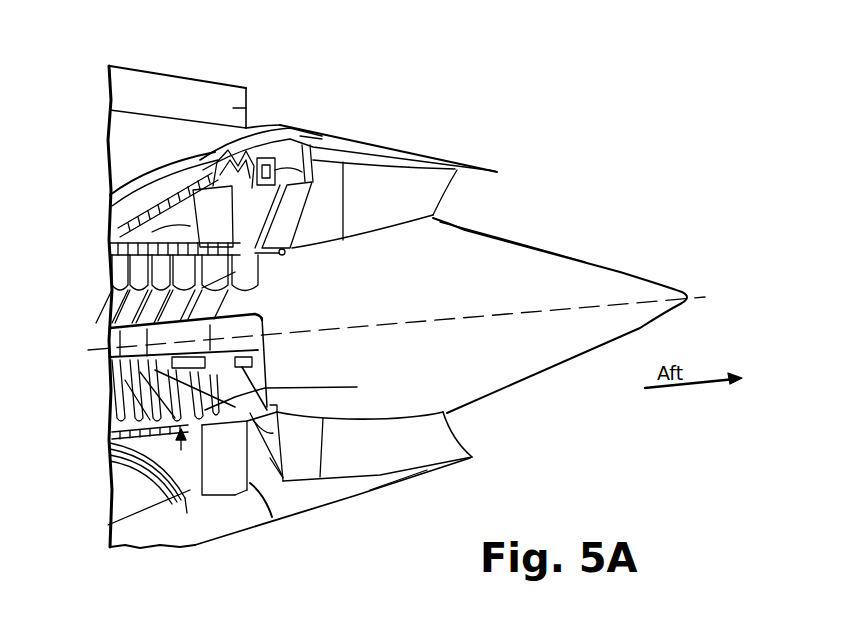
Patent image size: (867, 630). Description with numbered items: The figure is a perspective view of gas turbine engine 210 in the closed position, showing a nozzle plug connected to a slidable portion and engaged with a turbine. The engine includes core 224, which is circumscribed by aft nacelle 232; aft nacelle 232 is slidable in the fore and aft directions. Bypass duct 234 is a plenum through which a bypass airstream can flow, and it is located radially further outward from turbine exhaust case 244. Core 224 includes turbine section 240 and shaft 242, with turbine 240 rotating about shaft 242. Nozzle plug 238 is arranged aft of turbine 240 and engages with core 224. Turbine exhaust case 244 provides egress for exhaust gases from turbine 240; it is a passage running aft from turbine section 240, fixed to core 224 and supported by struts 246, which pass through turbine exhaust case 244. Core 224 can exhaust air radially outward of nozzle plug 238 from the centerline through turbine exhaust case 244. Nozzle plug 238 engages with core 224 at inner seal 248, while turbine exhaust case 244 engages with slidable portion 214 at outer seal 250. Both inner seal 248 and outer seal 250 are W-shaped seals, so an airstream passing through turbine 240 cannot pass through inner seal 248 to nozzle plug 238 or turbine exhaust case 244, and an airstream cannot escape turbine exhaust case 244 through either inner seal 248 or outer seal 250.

The gas turbine engine 210 is at (600, 145).
The slidable portion 214 is at (264, 74).
The core 224 is at (110, 521).
The aft nacelle 232 is at (267, 513).
The bypass duct 234 is at (250, 111).
The nozzle plug 238 is at (583, 260).
The turbine 240 is at (278, 388).
The shaft 242 is at (266, 336).
The turbine exhaust case 244 is at (237, 478).
The strut 246 is at (333, 198).
The inner seal 248 is at (286, 255).
The outer seal 250 is at (325, 142).